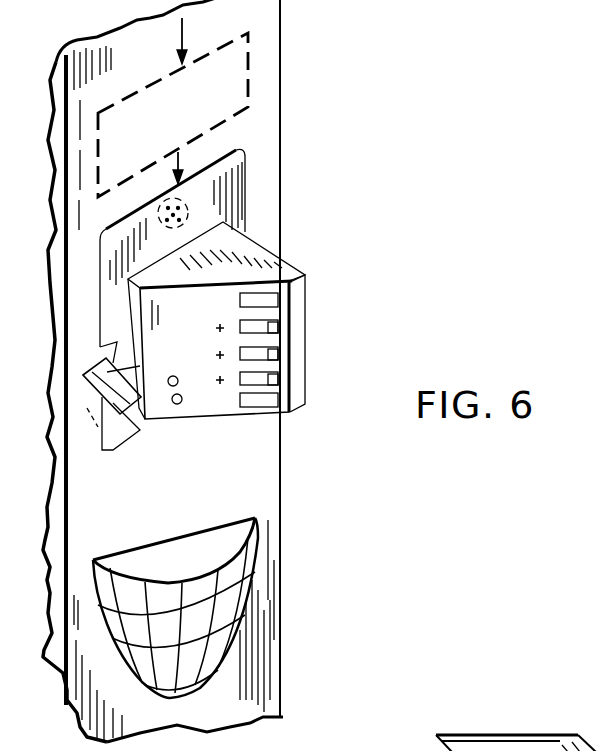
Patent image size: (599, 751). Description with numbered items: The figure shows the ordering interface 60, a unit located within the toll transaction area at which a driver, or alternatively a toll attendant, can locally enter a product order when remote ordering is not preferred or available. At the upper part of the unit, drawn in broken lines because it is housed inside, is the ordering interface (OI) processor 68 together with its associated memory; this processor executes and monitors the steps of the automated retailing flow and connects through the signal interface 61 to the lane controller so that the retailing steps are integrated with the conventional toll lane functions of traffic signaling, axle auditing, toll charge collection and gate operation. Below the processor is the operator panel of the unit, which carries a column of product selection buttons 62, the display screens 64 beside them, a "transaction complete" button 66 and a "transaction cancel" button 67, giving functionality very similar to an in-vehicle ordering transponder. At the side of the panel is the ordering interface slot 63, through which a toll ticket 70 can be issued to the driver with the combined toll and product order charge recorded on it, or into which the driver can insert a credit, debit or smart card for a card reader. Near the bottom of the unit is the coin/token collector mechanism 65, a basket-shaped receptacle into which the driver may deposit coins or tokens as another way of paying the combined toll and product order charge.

The ordering interface 60 is at (281, 172).
The signal interface 61 is at (178, 41).
The product selection buttons 62 is at (242, 377).
The ordering interface slot 63 is at (140, 366).
The display screens 64 is at (278, 300).
The coin/token collector mechanism 65 is at (213, 528).
The transaction complete button 66 is at (176, 404).
The transaction cancel button 67 is at (178, 382).
The ordering interface (OI) processor 68 is at (253, 47).
The toll ticket 70 is at (114, 419).